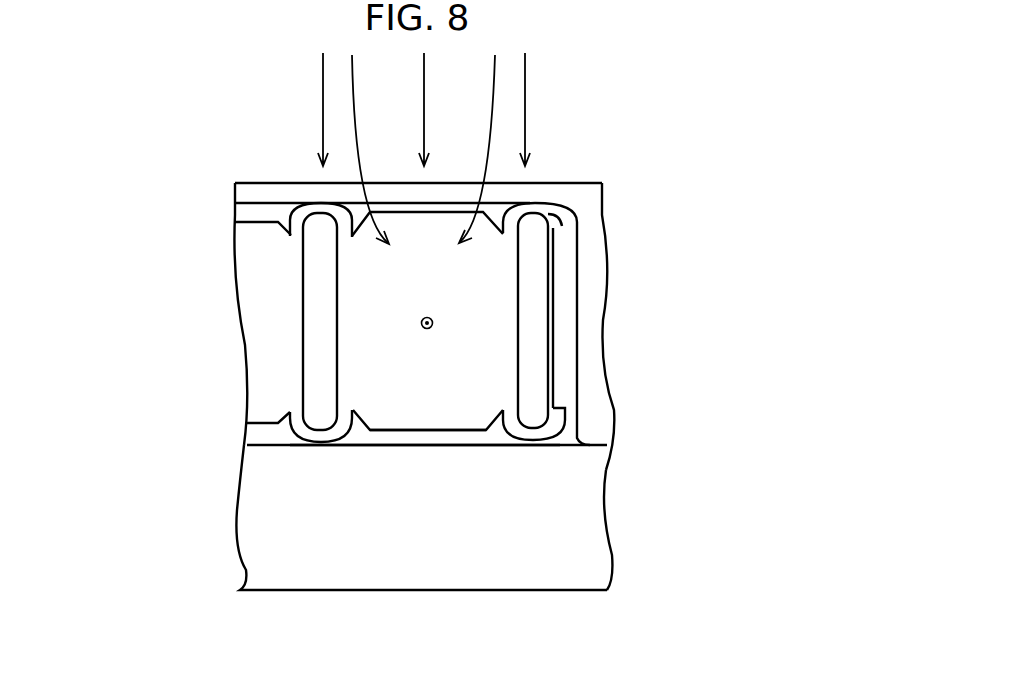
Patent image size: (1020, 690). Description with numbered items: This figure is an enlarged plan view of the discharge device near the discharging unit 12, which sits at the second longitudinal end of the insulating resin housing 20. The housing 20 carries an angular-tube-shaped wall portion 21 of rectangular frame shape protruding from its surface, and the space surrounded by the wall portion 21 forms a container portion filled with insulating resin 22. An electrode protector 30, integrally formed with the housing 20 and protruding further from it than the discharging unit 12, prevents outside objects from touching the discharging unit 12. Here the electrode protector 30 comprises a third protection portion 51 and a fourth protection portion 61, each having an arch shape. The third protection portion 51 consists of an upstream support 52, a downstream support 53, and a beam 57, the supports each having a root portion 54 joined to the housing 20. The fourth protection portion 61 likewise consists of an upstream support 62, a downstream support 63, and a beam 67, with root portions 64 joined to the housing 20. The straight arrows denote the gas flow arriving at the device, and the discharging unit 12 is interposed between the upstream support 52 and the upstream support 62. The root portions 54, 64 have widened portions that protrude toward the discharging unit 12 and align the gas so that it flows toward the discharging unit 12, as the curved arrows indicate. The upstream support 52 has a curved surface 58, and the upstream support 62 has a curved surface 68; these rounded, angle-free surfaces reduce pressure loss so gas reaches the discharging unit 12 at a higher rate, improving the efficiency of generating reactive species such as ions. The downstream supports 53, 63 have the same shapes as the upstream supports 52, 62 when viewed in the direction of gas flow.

The discharging unit 12 is at (441, 343).
The housing 20 is at (530, 562).
The wall portion 21 is at (413, 443).
The resin 22 is at (393, 390).
The electrode protector 30 is at (421, 321).
The third protection portion 51 is at (600, 320).
The upstream support 52 is at (533, 225).
The downstream support 53 is at (537, 418).
The root portion 54 is at (577, 203).
The beam 57 is at (538, 352).
The curved surface 58 is at (537, 187).
The fourth protection portion 61 is at (249, 321).
The upstream support 62 is at (298, 228).
The downstream support 63 is at (293, 421).
The root portion 64 is at (297, 213).
The beam 67 is at (317, 355).
The curved surface 68 is at (312, 187).